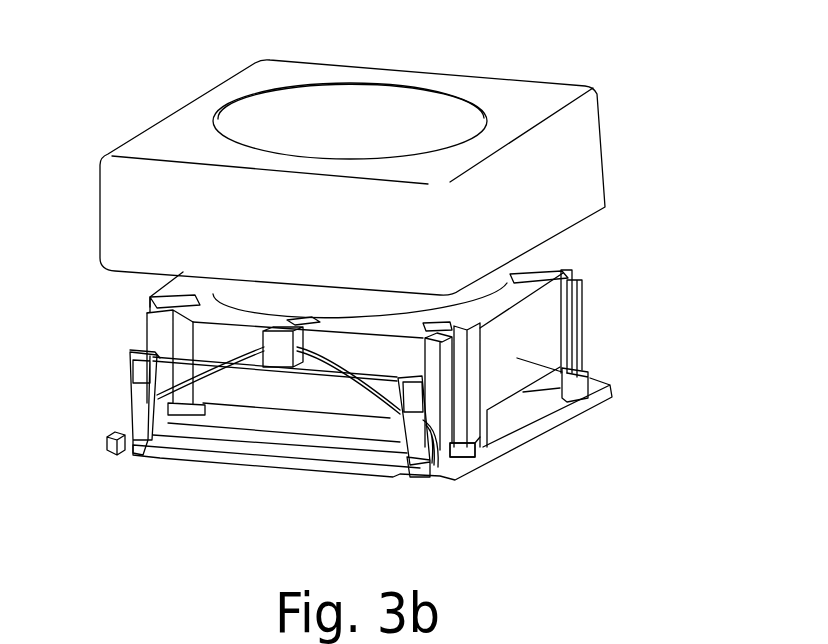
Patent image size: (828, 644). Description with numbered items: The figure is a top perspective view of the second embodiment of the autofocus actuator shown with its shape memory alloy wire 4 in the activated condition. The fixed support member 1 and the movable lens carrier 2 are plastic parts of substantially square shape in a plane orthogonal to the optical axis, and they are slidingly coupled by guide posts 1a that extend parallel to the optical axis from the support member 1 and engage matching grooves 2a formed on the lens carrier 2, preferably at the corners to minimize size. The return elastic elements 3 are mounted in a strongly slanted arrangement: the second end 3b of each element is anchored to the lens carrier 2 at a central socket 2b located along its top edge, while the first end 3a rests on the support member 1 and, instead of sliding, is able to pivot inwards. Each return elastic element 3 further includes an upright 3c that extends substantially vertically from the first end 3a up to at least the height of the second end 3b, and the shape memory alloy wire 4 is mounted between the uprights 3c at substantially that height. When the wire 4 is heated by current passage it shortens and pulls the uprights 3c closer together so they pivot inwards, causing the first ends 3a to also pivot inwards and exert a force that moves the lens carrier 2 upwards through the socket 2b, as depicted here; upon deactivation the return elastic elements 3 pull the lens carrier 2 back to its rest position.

The fixed support member 1 is at (543, 428).
The guide post 1a is at (460, 418).
The movable lens carrier 2 is at (597, 377).
The groove 2a is at (563, 265).
The central socket 2b is at (283, 358).
The return elastic element 3 is at (138, 450).
The first end 3a is at (443, 465).
The second end 3b is at (185, 338).
The upright 3c is at (140, 413).
The shape memory alloy wire 4 is at (247, 370).